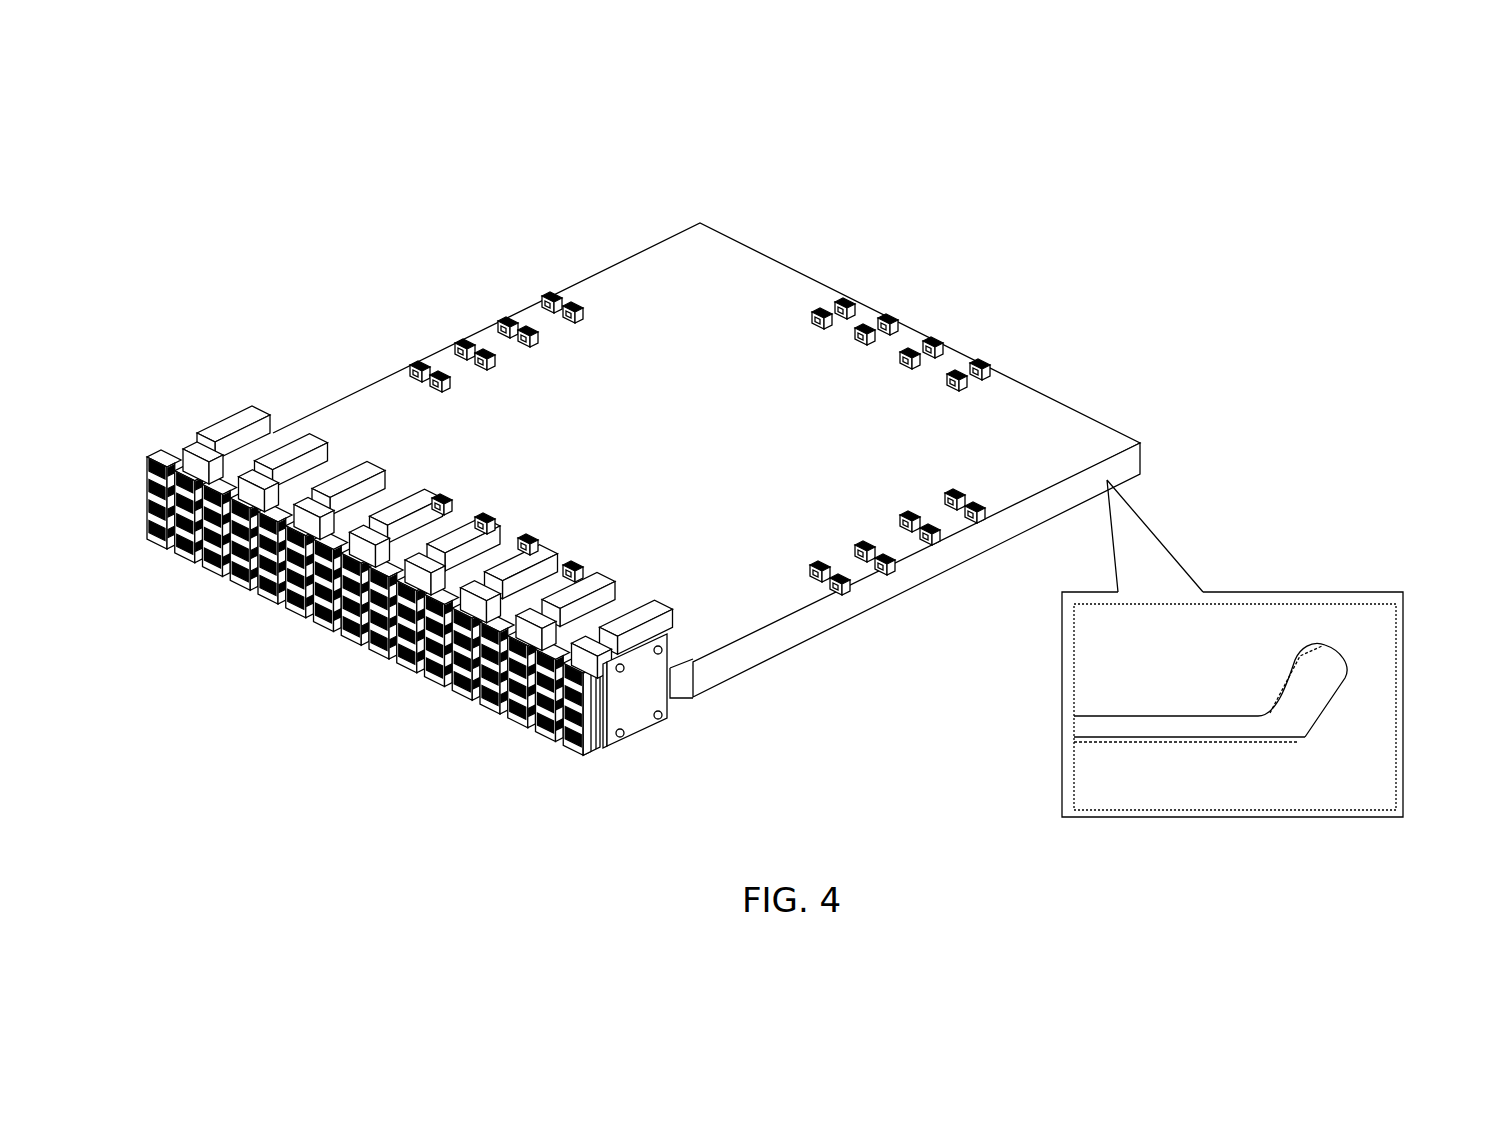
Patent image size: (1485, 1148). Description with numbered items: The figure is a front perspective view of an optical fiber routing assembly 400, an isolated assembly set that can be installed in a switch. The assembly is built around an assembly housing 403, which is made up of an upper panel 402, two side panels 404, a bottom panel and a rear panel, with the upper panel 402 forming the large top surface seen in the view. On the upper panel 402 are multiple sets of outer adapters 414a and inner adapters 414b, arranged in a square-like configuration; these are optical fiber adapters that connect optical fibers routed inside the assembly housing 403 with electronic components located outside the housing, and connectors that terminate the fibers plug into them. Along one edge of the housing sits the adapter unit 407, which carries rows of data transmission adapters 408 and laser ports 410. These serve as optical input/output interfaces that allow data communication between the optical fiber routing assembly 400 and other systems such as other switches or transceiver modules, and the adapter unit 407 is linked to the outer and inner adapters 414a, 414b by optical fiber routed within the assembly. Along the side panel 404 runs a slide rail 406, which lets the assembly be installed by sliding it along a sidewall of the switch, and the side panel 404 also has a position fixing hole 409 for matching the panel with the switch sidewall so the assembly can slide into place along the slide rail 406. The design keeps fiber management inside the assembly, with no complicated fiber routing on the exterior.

The optical fiber routing assembly 400 is at (1000, 138).
The upper panel 402 is at (1010, 417).
The assembly housing 403 is at (1160, 461).
The side panel 404 is at (766, 650).
The slide rail 406 is at (1095, 727).
The adapter unit 407 is at (593, 652).
The data transmission adapters 408 is at (168, 540).
The position fixing hole 409 is at (1332, 665).
The laser ports 410 is at (198, 445).
The outer adapters 414a is at (548, 288).
The inner adapters 414b is at (490, 368).